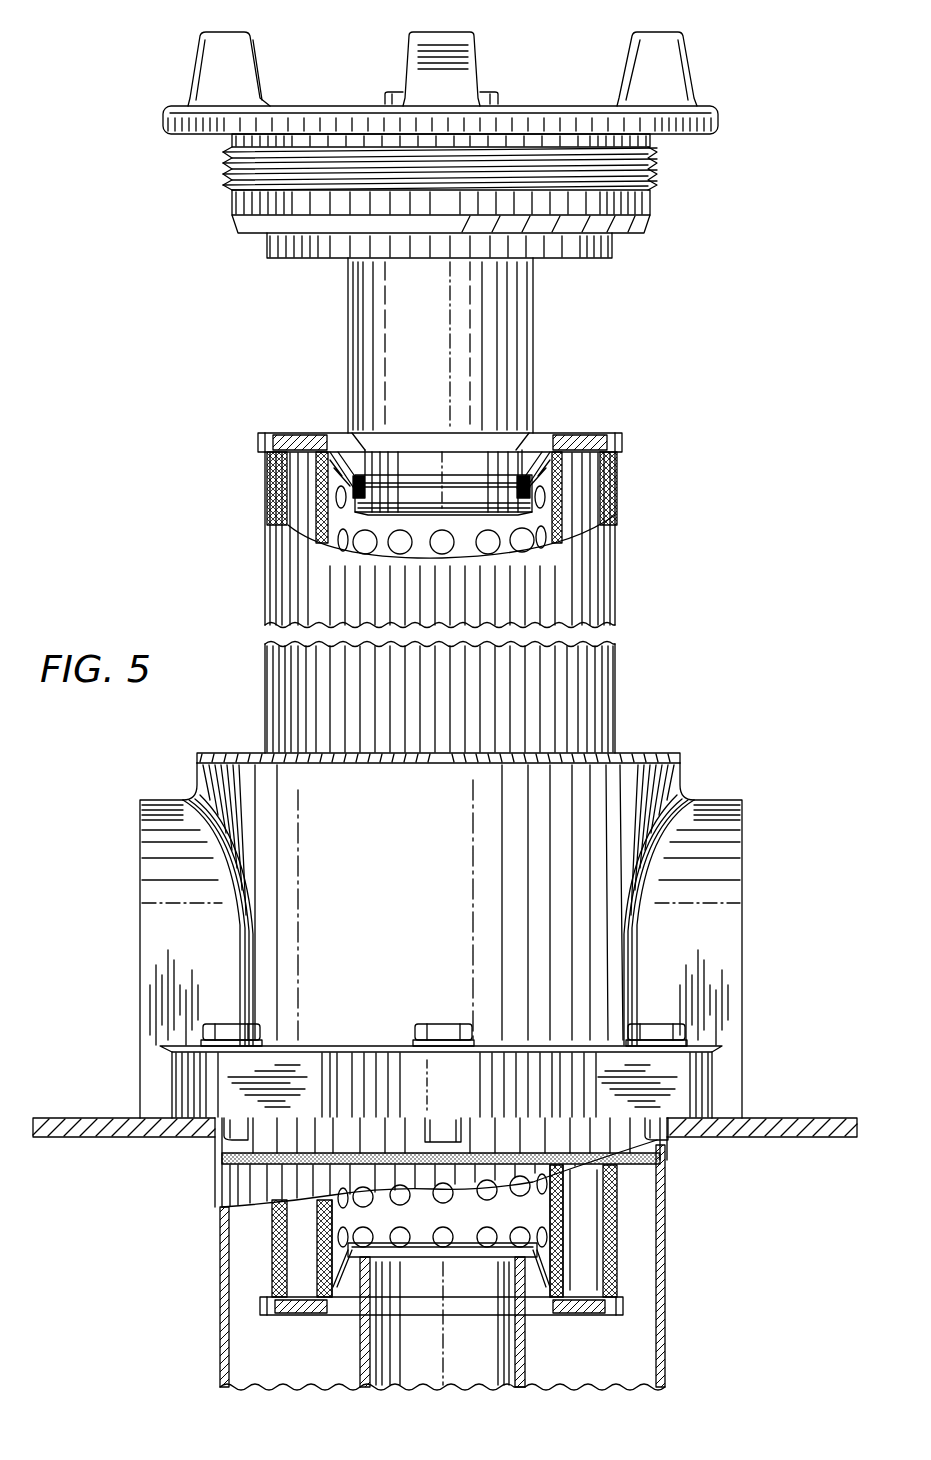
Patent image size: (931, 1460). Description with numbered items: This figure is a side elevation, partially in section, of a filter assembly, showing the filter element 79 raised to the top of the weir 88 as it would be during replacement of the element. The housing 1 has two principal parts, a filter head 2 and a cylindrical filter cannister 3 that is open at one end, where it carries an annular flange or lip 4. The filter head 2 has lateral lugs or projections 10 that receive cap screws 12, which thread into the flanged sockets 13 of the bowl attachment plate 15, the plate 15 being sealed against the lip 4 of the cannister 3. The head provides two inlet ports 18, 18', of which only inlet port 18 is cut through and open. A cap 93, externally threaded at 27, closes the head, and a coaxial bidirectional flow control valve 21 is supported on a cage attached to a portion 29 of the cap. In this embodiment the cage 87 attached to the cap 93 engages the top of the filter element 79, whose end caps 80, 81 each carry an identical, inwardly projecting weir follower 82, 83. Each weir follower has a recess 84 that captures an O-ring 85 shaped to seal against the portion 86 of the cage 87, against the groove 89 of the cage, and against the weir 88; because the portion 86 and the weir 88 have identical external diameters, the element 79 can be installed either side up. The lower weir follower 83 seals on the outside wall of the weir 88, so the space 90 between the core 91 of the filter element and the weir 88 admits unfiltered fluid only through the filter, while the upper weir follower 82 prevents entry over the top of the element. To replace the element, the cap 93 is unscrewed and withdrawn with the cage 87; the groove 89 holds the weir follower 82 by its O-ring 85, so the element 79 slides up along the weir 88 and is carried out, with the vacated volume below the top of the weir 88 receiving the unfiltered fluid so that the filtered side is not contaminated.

The housing 1 is at (662, 686).
The filter head 2 is at (670, 782).
The filter cannister 3 is at (667, 1333).
The annular flange or lip 4 is at (673, 1145).
The lateral lugs or projections 10 is at (407, 1072).
The cap screws 12 is at (438, 1024).
The sockets 13 is at (428, 1133).
The bowl attachment plate 15 is at (93, 1140).
The inlet port 18 is at (136, 959).
The inlet port 18' is at (764, 959).
The coaxial bidirectional flow control valve 21 is at (548, 309).
The external threads 27 is at (657, 160).
The portion of the cap 29 is at (283, 262).
The filter element 79 is at (628, 563).
The end cap 80 is at (603, 433).
The end cap 81 is at (310, 1312).
The weir follower 82 is at (345, 483).
The weir follower 83 is at (337, 1275).
The recess 84 is at (362, 482).
The O-ring 85 is at (530, 485).
The portion of the cage 86 is at (362, 488).
The cage 87 is at (532, 365).
The weir 88 is at (524, 1357).
The groove 89 is at (363, 514).
The space 90 is at (415, 1213).
The core 91 is at (563, 1223).
The cap 93 is at (673, 65).